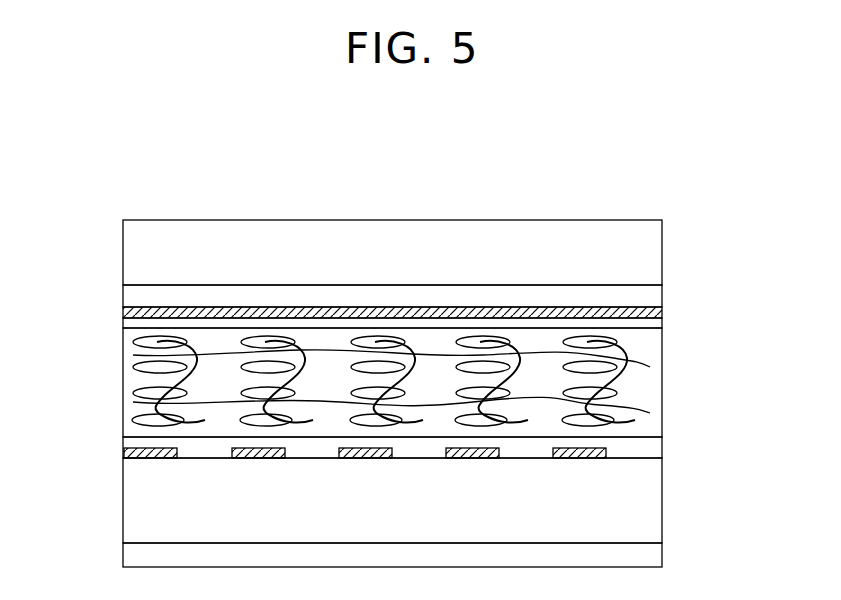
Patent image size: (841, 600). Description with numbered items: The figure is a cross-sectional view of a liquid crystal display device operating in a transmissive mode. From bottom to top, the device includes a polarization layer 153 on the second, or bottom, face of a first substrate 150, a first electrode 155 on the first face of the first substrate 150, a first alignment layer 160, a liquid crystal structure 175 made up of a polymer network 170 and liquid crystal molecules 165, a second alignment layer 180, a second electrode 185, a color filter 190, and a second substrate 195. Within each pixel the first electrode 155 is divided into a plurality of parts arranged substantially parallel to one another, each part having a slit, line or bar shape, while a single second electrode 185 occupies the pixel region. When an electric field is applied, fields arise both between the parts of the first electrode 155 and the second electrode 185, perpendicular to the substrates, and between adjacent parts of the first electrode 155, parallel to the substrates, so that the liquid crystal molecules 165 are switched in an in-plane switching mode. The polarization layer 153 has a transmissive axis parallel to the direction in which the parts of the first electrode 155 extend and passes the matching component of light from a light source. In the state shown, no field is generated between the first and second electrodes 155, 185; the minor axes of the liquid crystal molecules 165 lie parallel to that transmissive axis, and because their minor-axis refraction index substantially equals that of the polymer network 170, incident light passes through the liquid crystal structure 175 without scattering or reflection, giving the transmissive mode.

The first substrate 150 is at (662, 496).
The polarization layer 153 is at (662, 555).
The first electrode 155 is at (124, 449).
The first alignment layer 160 is at (662, 448).
The liquid crystal molecules 165 is at (610, 340).
The polymer network 170 is at (610, 377).
The liquid crystal structure 175 is at (463, 382).
The second alignment layer 180 is at (658, 322).
The second electrode 185 is at (658, 315).
The color filter 190 is at (658, 293).
The second substrate 195 is at (657, 240).